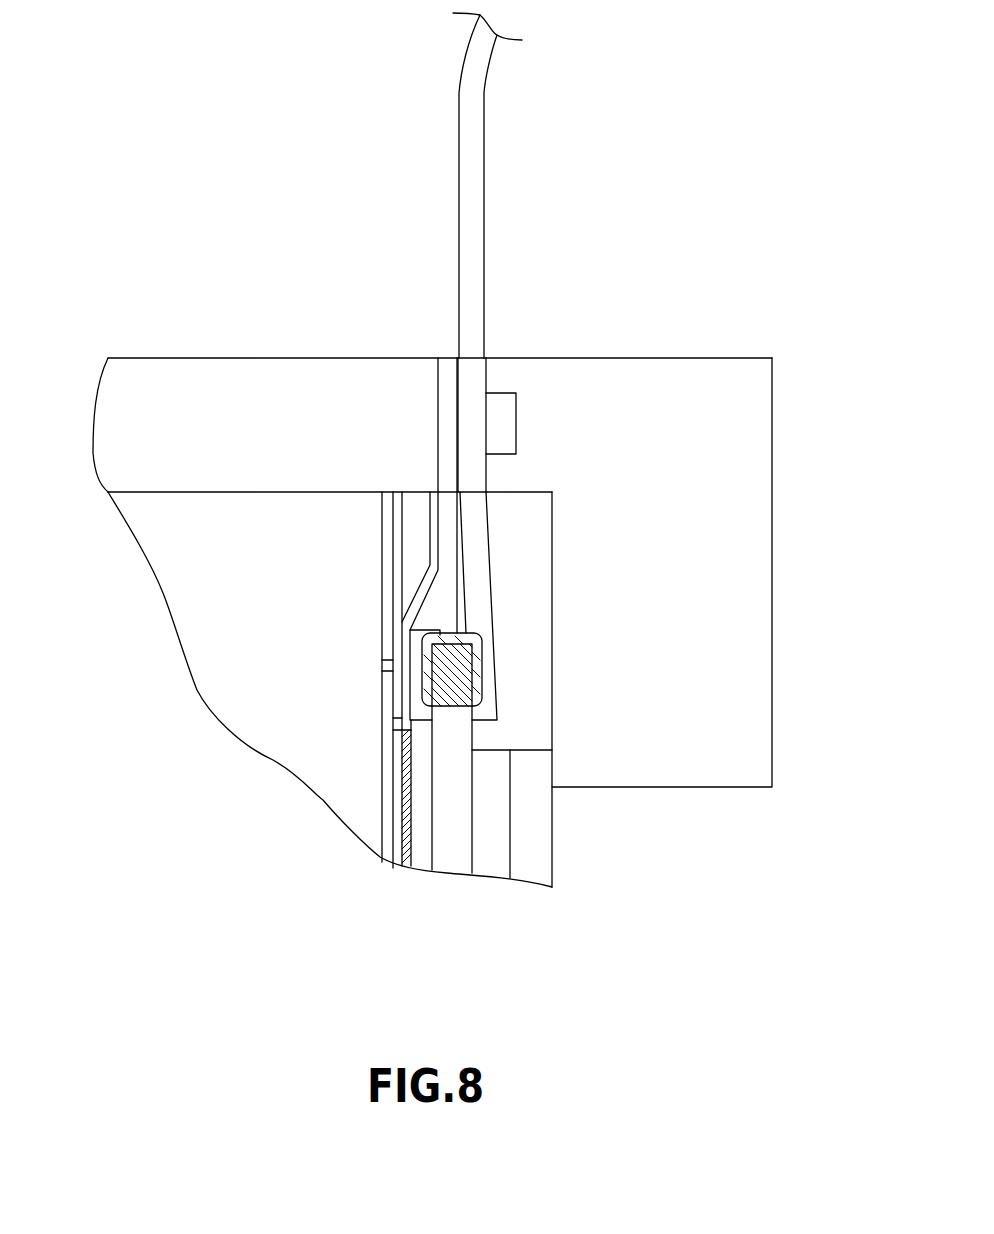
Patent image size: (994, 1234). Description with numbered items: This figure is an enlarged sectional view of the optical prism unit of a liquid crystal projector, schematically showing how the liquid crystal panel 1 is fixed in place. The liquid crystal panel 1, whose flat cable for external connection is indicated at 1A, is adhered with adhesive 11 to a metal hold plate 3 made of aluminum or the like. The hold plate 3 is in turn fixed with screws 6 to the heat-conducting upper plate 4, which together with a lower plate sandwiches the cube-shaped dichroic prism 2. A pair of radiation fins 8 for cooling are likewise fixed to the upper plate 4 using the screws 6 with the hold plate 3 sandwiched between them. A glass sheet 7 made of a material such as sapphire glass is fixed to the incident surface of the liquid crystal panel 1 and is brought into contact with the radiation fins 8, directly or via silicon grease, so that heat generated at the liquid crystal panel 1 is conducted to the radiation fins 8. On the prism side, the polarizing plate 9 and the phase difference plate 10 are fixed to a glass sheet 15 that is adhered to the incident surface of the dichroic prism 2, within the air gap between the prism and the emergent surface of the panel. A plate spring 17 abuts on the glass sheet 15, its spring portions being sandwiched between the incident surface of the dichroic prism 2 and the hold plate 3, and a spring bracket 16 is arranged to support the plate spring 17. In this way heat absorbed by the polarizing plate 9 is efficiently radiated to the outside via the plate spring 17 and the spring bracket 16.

The liquid crystal panel 1 is at (475, 838).
The tape strip 1A is at (485, 93).
The dichroic prism 2 is at (220, 592).
The hold plate 3 is at (447, 357).
The upper plate 4 is at (153, 412).
The screw 6 is at (516, 420).
The glass sheet 7 is at (553, 843).
The radiation fin 8 is at (703, 563).
The polarizing plate 9 is at (412, 822).
The phase difference plate 10 is at (390, 800).
The adhesive 11 is at (482, 670).
The glass sheet 15 is at (380, 720).
The spring bracket 16 is at (381, 627).
The plate spring 17 is at (388, 557).